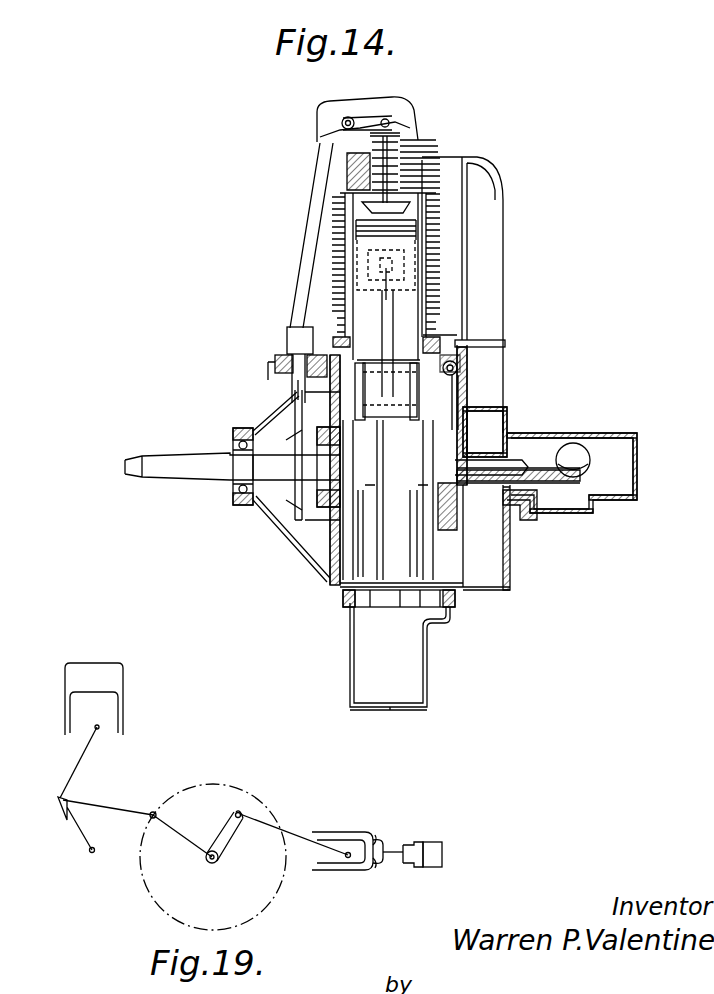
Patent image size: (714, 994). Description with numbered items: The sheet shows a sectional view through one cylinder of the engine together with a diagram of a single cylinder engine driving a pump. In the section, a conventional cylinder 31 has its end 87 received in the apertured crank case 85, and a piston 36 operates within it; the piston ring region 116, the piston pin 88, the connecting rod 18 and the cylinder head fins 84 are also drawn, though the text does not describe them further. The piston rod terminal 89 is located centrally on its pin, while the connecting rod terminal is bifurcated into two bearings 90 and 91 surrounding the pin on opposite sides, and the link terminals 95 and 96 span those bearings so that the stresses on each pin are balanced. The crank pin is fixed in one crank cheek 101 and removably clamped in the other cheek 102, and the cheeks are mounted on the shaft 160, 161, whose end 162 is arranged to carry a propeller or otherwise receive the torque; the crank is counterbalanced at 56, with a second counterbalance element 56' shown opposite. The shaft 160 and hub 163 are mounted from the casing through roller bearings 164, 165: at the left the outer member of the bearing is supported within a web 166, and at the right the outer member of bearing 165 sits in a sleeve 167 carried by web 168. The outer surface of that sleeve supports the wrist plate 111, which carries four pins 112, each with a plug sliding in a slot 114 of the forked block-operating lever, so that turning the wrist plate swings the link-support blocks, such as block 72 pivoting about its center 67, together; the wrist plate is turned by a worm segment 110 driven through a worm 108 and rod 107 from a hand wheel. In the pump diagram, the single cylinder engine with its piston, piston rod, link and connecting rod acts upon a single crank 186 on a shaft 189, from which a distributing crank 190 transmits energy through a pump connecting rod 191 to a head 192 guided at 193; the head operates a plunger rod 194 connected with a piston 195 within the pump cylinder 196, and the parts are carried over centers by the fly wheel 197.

In FIG. 14, the piston rings 116 is at (415, 232).
In FIG. 14, the piston 36 is at (418, 270).
In FIG. 14, the cylinder 31 is at (345, 283).
In FIG. 14, the connecting rod 18 is at (390, 293).
In FIG. 14, the cylinder head fins 84 is at (426, 312).
In FIG. 14, the end of cylinder 87 is at (333, 350).
In FIG. 14, the piston pin 88 is at (380, 352).
In FIG. 14, the crank case 85 is at (480, 343).
In FIG. 14, the worm 108 is at (460, 366).
In FIG. 14, the rod 107 is at (462, 376).
In FIG. 14, the worm segment 110 is at (470, 385).
In FIG. 14, the web 168 is at (508, 420).
In FIG. 14, the shaft 161 is at (525, 468).
In FIG. 14, the web 166 is at (245, 430).
In FIG. 14, the end of shaft 162 is at (195, 475).
In FIG. 14, the shaft 160 is at (282, 470).
In FIG. 14, the roller bearing 164 is at (325, 510).
In FIG. 14, the counterbalance 56 is at (319, 599).
In FIG. 14, the pivot point 67 is at (345, 608).
In FIG. 14, the nut 56' is at (474, 616).
In FIG. 14, the link terminal 95 is at (357, 370).
In FIG. 14, the link terminal 96 is at (448, 367).
In FIG. 14, the bearing of connecting rod terminal 90 is at (350, 425).
In FIG. 14, the piston rod terminal 89 is at (392, 412).
In FIG. 14, the bearing of connecting rod terminal 91 is at (403, 420).
In FIG. 14, the crank cheek 101 is at (348, 445).
In FIG. 14, the crank cheek 102 is at (420, 440).
In FIG. 14, the sleeve 167 is at (430, 450).
In FIG. 14, the roller bearing 165 is at (440, 495).
In FIG. 14, the slot 114 is at (440, 525).
In FIG. 14, the wrist plate 111 is at (450, 520).
In FIG. 14, the block 72 is at (440, 548).
In FIG. 14, the hub 163 is at (470, 495).
In FIG. 14, the pin 112 is at (470, 525).
In FIG. 19, the crank 186 is at (185, 835).
In FIG. 19, the shaft 189 is at (213, 868).
In FIG. 19, the distributing crank 190 is at (226, 830).
In FIG. 19, the fly wheel 197 is at (265, 892).
In FIG. 19, the pump connecting rod 191 is at (290, 836).
In FIG. 19, the guide 193 is at (343, 832).
In FIG. 19, the head 192 is at (383, 838).
In FIG. 19, the plunger rod 194 is at (413, 873).
In FIG. 19, the piston 195 is at (440, 852).
In FIG. 19, the pump cylinder 196 is at (440, 873).